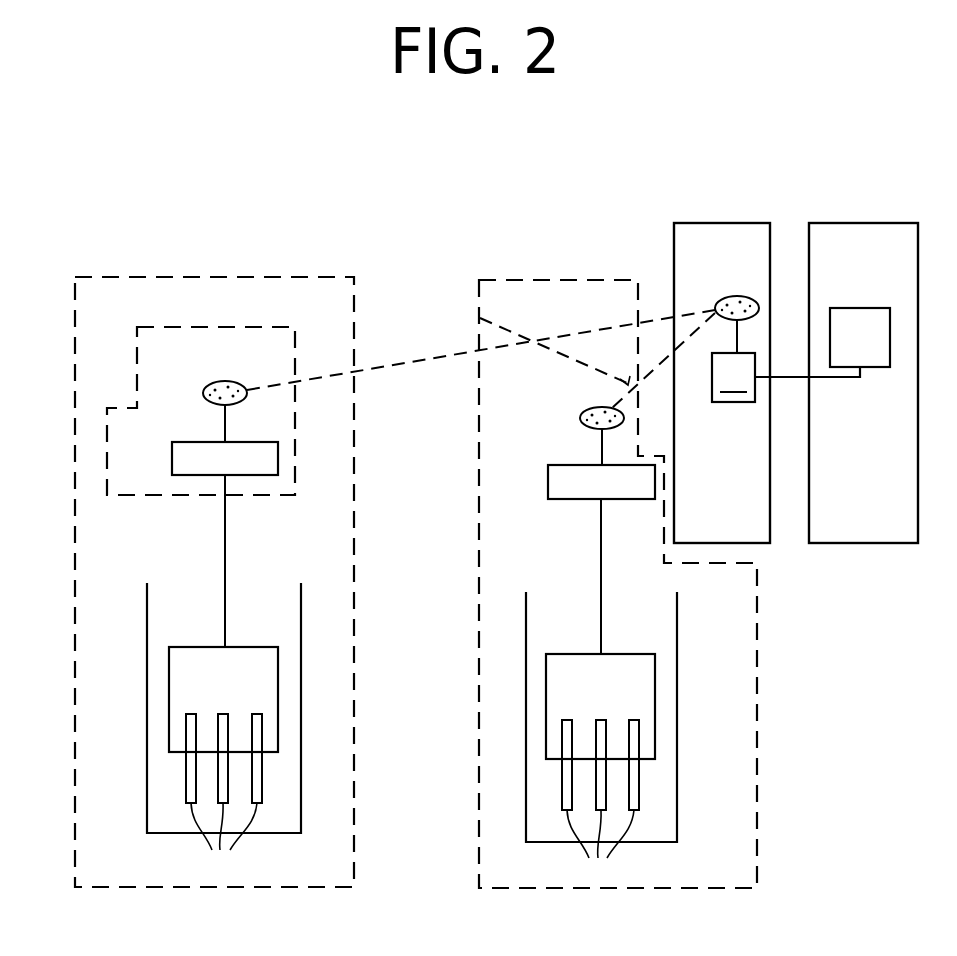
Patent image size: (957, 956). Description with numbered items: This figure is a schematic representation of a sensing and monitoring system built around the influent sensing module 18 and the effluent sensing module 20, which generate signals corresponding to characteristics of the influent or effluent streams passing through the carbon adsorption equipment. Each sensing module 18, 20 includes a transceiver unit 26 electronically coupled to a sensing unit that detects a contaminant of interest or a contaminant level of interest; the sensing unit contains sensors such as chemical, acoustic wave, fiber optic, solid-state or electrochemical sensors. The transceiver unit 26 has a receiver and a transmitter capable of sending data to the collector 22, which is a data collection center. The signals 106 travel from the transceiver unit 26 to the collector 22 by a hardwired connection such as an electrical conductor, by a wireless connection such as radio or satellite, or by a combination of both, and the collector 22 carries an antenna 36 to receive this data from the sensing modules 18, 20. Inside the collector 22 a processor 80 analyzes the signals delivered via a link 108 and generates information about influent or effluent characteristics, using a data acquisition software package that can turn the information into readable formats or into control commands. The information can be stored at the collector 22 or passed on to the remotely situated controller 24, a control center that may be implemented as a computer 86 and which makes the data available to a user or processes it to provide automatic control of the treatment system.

The influent sensing module 18 is at (187, 277).
The effluent sensing module 20 is at (536, 280).
The collector 22 is at (728, 222).
The controller 24 is at (852, 222).
The transceiver unit 26 is at (115, 388).
The antenna 36 is at (735, 296).
The processor 80 is at (733, 377).
The computer 86 is at (858, 308).
The signals 106 is at (467, 351).
The link 108 is at (785, 378).